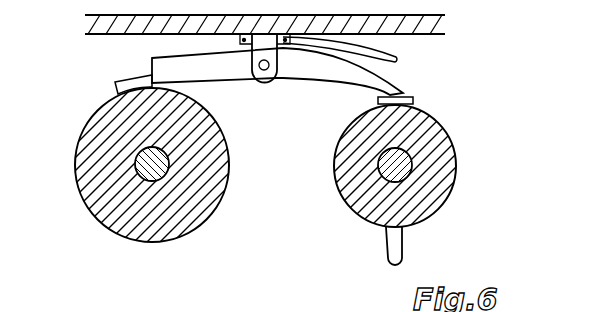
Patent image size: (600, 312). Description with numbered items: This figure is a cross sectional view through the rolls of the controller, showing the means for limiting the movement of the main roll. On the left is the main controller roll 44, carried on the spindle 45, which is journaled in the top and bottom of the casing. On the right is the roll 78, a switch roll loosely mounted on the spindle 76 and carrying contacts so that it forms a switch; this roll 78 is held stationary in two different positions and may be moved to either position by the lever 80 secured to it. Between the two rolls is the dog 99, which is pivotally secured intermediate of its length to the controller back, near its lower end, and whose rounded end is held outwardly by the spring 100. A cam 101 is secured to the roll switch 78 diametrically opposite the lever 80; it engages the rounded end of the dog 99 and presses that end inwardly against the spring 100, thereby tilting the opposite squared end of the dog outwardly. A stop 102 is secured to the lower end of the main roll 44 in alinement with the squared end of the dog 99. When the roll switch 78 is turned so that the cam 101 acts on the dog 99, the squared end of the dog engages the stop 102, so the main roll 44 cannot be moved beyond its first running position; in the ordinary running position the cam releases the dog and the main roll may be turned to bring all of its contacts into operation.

The main controller roll 44 is at (75, 168).
The spindle 45 is at (168, 163).
The dog 99 is at (298, 68).
The spring 100 is at (403, 62).
The cam 101 is at (413, 100).
The stop 102 is at (127, 80).
The roll 78 is at (455, 143).
The spindle 76 is at (410, 168).
The lever 80 is at (397, 242).